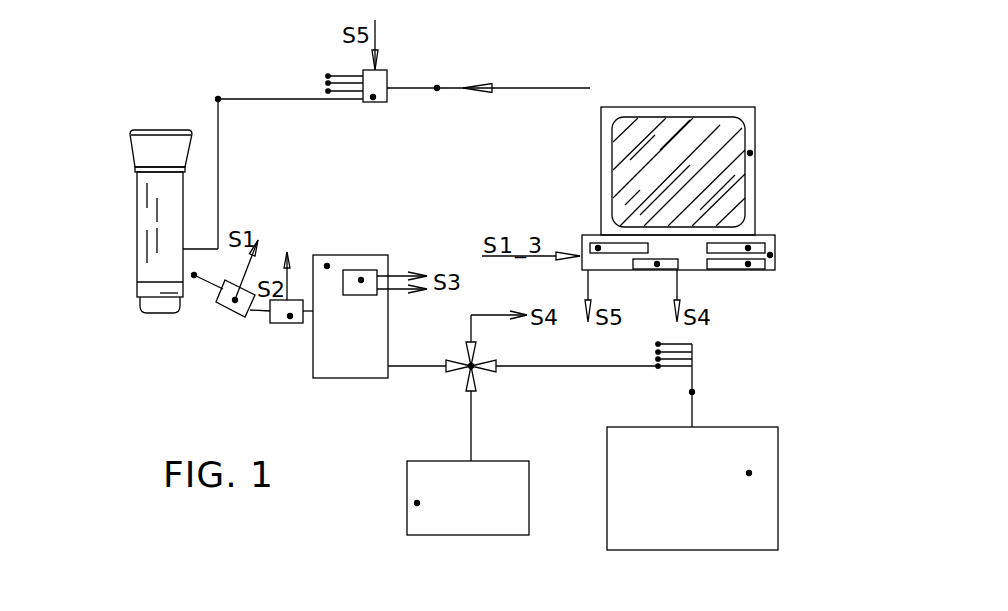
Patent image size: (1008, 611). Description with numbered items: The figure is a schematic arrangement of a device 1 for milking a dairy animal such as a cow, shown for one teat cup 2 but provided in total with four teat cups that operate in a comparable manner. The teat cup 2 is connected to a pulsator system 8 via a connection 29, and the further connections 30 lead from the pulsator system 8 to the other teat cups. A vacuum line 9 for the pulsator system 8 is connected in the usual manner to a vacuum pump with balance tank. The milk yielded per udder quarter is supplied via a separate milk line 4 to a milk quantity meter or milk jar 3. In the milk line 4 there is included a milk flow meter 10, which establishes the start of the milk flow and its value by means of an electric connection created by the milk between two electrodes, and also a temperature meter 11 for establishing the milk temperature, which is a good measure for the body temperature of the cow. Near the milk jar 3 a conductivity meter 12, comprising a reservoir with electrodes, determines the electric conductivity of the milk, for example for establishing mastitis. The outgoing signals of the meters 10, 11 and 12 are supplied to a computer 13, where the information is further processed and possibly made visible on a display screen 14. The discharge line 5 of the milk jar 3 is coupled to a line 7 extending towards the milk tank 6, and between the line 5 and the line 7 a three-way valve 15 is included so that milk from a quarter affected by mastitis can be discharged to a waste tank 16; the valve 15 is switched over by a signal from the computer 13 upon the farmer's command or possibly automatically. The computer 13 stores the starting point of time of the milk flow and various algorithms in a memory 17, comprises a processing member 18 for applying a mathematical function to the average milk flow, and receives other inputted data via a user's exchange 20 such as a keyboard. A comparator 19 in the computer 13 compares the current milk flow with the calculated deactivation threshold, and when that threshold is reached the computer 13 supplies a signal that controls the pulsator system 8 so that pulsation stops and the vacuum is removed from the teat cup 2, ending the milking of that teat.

The device 1 is at (297, 160).
The teat cup 2 is at (133, 222).
The milk jar 3 is at (327, 266).
The milk line 4 is at (194, 275).
The discharge line 5 is at (658, 344).
The milk tank 6 is at (749, 473).
The line 7 is at (692, 392).
The pulsator system 8 is at (373, 97).
The vacuum line 9 is at (437, 89).
The milk flow meter 10 is at (235, 300).
The temperature meter 11 is at (290, 316).
The conductivity meter 12 is at (361, 280).
The computer 13 is at (770, 255).
The display screen 14 is at (750, 153).
The three-way valve 15 is at (471, 366).
The waste tank 16 is at (417, 503).
The memory 17 is at (748, 264).
The processing member 18 is at (748, 248).
The comparator 19 is at (598, 248).
The user's exchange 20 is at (657, 264).
The connection 29 is at (218, 99).
The connections 30 is at (328, 91).